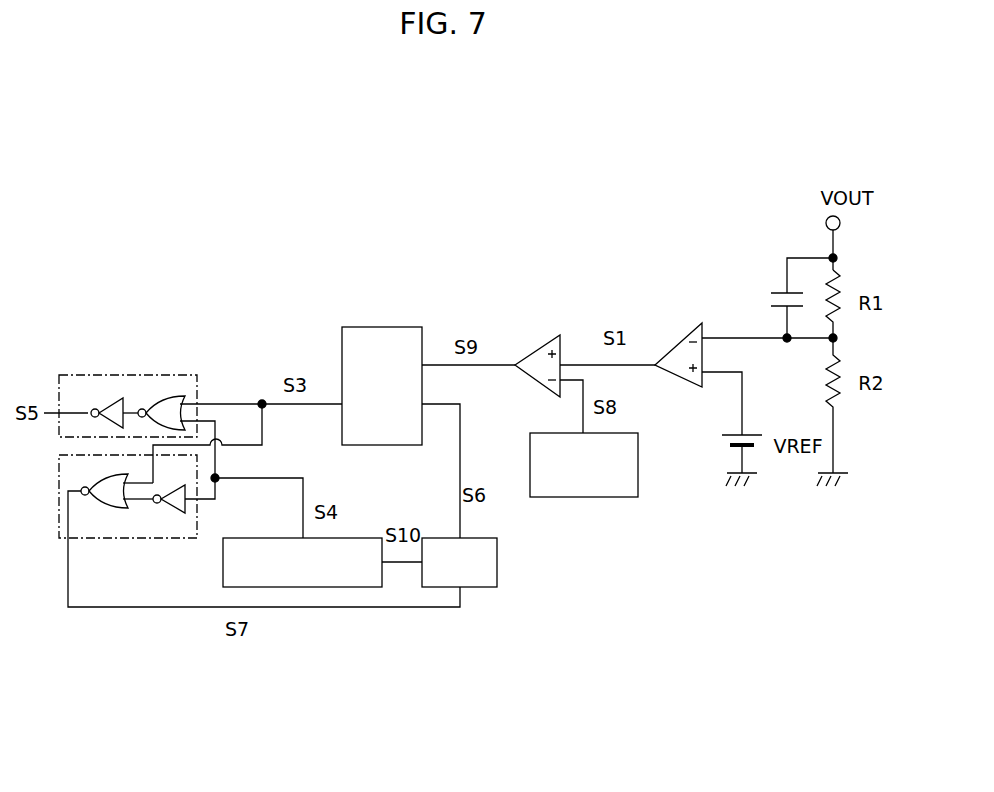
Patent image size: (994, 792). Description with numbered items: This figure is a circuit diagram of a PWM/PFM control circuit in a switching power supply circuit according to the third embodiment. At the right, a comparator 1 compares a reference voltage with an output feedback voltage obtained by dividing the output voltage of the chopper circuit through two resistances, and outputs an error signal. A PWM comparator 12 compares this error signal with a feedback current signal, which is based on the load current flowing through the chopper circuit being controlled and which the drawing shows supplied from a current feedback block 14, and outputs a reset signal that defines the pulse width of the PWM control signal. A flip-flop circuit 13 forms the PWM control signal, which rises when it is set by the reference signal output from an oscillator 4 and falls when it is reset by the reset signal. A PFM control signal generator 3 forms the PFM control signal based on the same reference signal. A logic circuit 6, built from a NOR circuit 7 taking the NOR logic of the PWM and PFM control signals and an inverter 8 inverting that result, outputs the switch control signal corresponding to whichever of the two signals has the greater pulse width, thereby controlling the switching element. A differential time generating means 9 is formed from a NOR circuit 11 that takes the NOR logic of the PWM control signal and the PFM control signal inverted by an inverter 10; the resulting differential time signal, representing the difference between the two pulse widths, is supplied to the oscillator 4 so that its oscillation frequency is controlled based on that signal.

The comparator 1 is at (677, 350).
The PFM control signal generator 3 is at (348, 578).
The oscillator 4 is at (482, 578).
The logic circuit 6 is at (133, 375).
The NOR circuit 7 is at (166, 408).
The inverter 8 is at (108, 410).
The differential time generating means 9 is at (133, 540).
The inverter 10 is at (180, 514).
The NOR circuit 11 is at (98, 507).
The PWM comparator 12 is at (535, 352).
The flip-flop circuit 13 is at (362, 338).
The current feedback circuit 14 is at (610, 487).